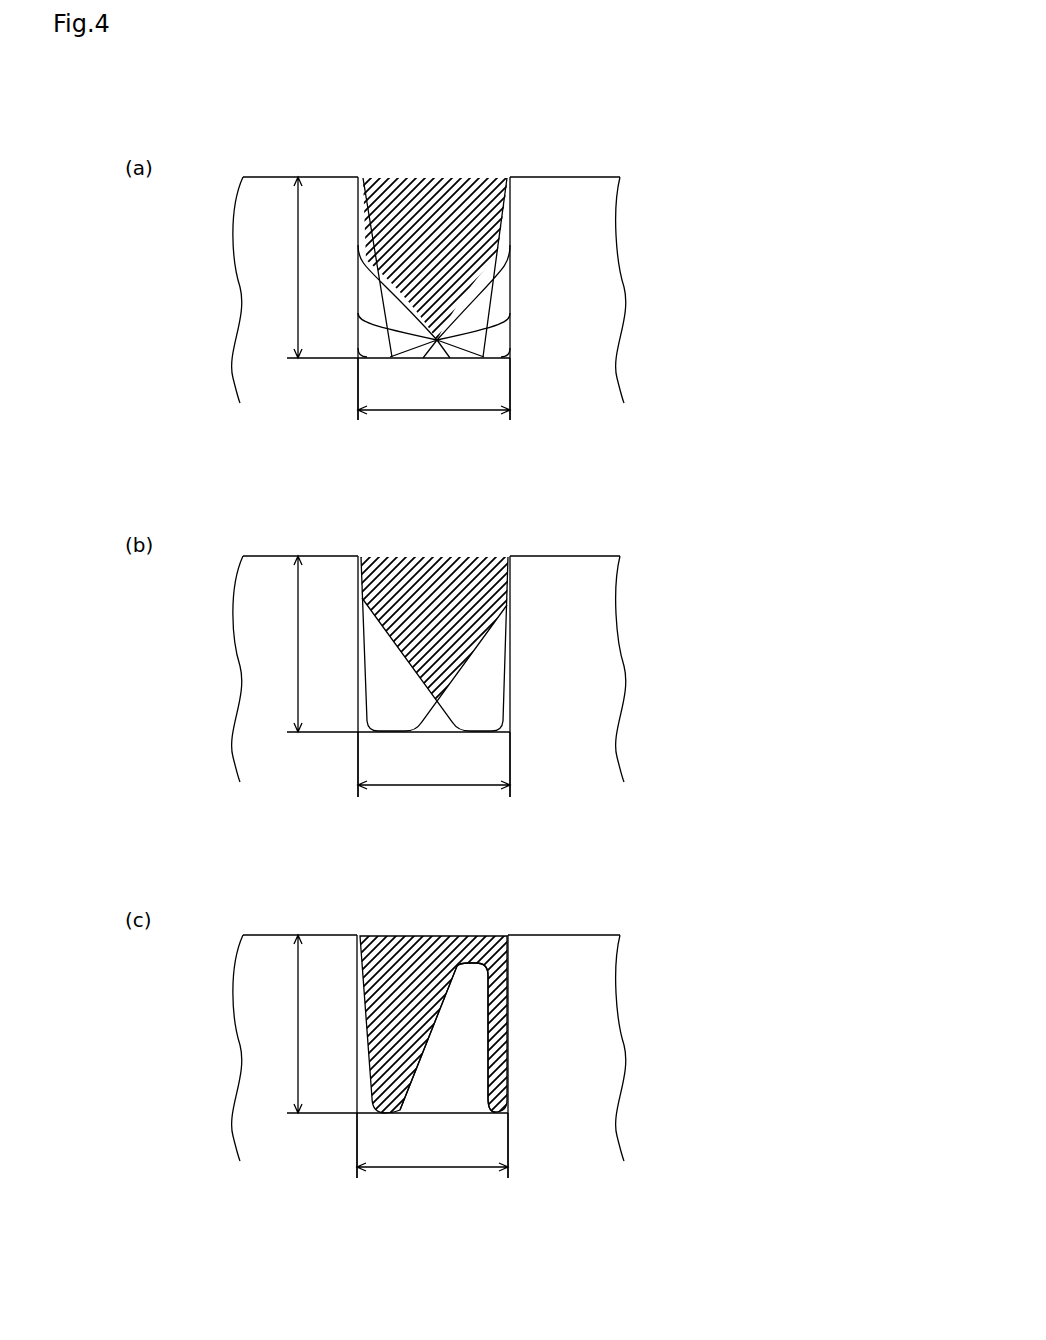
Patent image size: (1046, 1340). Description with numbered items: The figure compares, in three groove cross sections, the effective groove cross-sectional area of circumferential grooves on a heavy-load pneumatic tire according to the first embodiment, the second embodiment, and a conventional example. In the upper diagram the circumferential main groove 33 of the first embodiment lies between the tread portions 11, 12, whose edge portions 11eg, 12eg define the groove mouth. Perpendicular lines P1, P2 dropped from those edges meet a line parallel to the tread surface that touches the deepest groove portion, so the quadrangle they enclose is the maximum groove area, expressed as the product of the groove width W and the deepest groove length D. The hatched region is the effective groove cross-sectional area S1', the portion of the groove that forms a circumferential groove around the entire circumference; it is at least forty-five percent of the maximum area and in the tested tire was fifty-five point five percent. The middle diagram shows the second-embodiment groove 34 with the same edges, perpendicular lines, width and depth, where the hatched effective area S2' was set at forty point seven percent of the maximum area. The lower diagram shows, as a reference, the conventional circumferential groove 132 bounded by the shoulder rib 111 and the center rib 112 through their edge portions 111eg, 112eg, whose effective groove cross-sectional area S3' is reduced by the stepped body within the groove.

The first plate member 11 is at (279, 168).
The second plate member 12 is at (609, 168).
The edge portion 11eg is at (358, 176).
The edge portion 12eg is at (512, 176).
The circumferential main groove 33 is at (438, 168).
The effective groove cross-sectional area S1' is at (438, 215).
The molten weld region 34 is at (432, 547).
The effective groove cross-sectional area S2' is at (434, 590).
The shoulder rib 111 is at (276, 926).
The center rib 112 is at (611, 926).
The edge of first plate member 111eg is at (358, 934).
The edge of second plate member 112eg is at (510, 934).
The circumferential groove 132 is at (440, 926).
The effective groove cross-sectional area S3' is at (459, 977).
The deepest groove length D is at (393, 645).
The groove width W is at (433, 774).
The perpendicular line P1 is at (358, 390).
The perpendicular line P2 is at (510, 390).